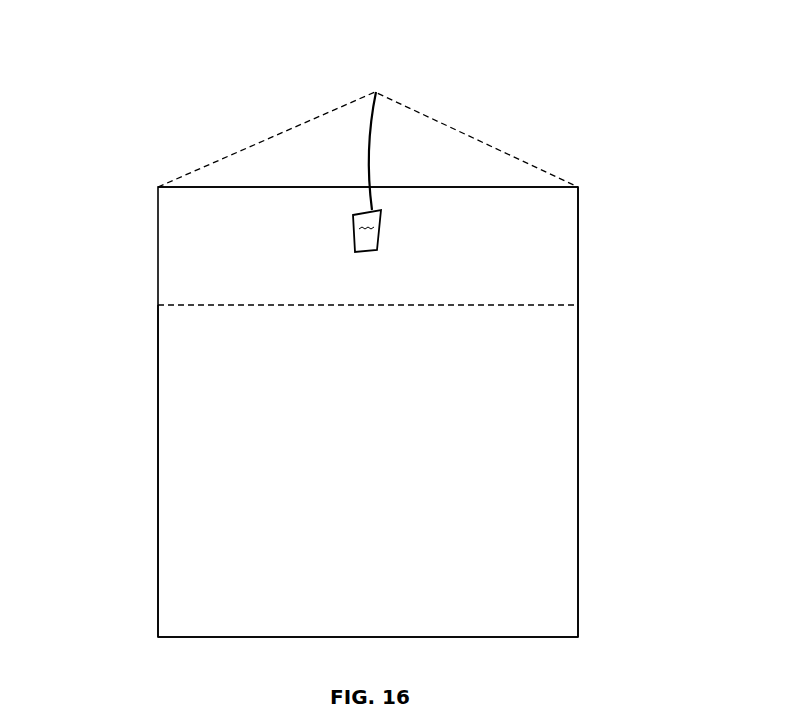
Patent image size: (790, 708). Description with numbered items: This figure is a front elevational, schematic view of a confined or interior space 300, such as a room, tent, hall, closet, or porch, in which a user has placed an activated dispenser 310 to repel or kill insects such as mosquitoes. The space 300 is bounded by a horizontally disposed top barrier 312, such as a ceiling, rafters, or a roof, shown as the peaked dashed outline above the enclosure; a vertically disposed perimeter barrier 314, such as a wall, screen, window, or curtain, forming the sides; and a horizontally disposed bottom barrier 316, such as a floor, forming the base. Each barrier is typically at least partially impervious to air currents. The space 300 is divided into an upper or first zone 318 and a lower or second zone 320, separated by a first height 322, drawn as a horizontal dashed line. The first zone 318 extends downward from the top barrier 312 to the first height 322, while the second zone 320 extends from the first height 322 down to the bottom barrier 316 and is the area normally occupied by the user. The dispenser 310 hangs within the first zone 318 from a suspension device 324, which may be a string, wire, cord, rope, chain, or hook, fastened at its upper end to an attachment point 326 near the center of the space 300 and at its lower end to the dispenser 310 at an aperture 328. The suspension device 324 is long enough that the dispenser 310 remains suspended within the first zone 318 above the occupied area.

The space 300 is at (560, 119).
The dispenser 310 is at (402, 222).
The top barrier 312 is at (440, 115).
The perimeter barrier 314 is at (578, 437).
The bottom barrier 316 is at (230, 637).
The first zone 318 is at (188, 241).
The second zone 320 is at (193, 423).
The first height 322 is at (558, 304).
The suspension device 324 is at (365, 150).
The attachment point 326 is at (379, 88).
The aperture 328 is at (355, 215).